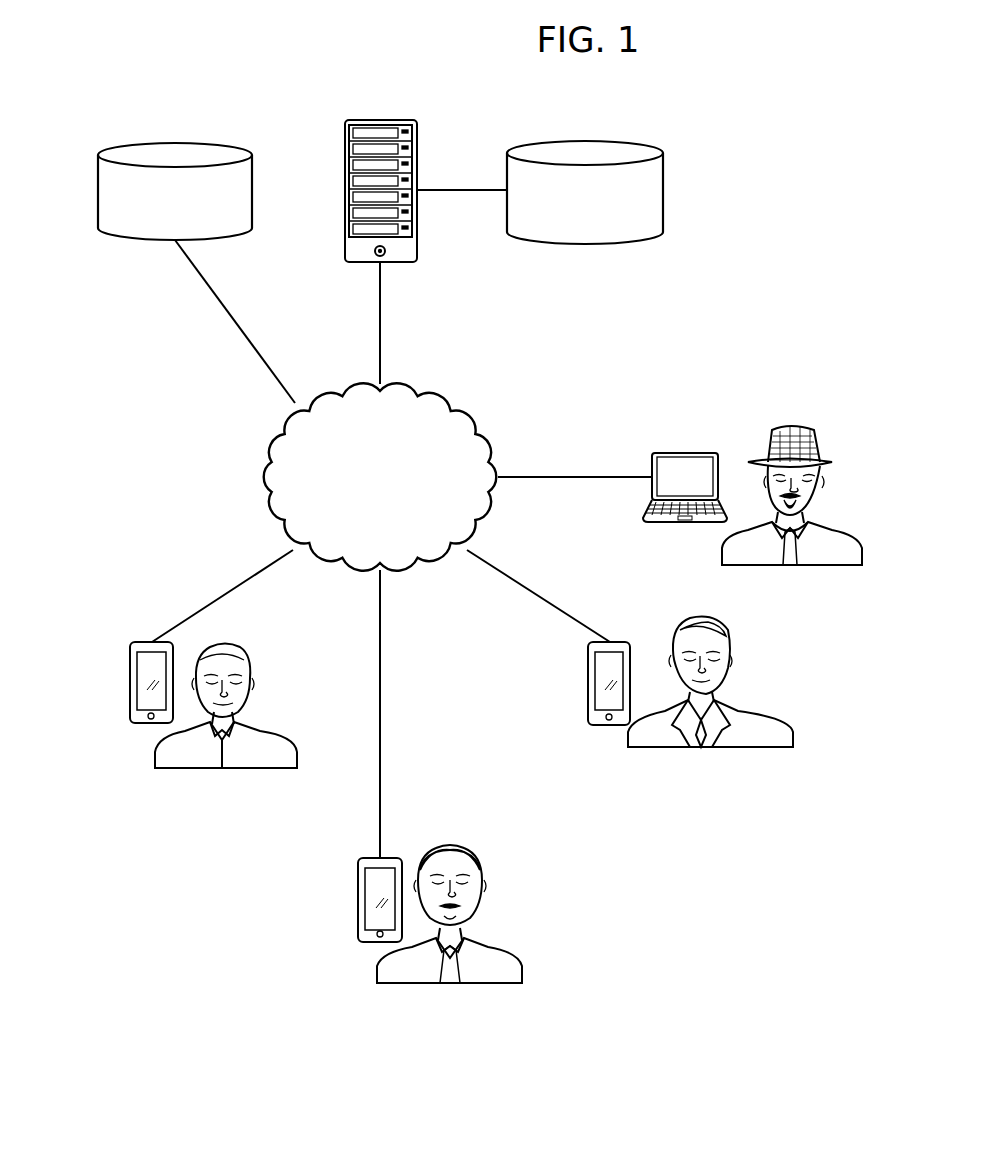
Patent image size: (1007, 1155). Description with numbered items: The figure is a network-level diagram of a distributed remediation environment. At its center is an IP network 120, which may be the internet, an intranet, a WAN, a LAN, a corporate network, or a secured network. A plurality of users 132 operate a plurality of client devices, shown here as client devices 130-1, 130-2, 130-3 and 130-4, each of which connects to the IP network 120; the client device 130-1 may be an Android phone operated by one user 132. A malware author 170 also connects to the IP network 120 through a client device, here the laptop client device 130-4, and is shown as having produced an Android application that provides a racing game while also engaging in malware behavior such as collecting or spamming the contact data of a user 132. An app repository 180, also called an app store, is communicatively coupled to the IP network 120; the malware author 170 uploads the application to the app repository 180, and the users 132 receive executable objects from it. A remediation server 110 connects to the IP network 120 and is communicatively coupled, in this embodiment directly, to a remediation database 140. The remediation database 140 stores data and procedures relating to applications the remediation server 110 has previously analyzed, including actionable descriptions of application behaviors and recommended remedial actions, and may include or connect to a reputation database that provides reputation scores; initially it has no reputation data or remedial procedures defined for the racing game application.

The remediation server 110 is at (365, 120).
The IP network 120 is at (360, 512).
The client device 130-1 is at (358, 899).
The client device 130-2 is at (588, 683).
The client device 130-3 is at (130, 683).
The client device 130-4 is at (686, 453).
The user 132 is at (215, 768).
The remediation database 140 is at (585, 142).
The malware author 170 is at (790, 427).
The app repository 180 is at (173, 143).